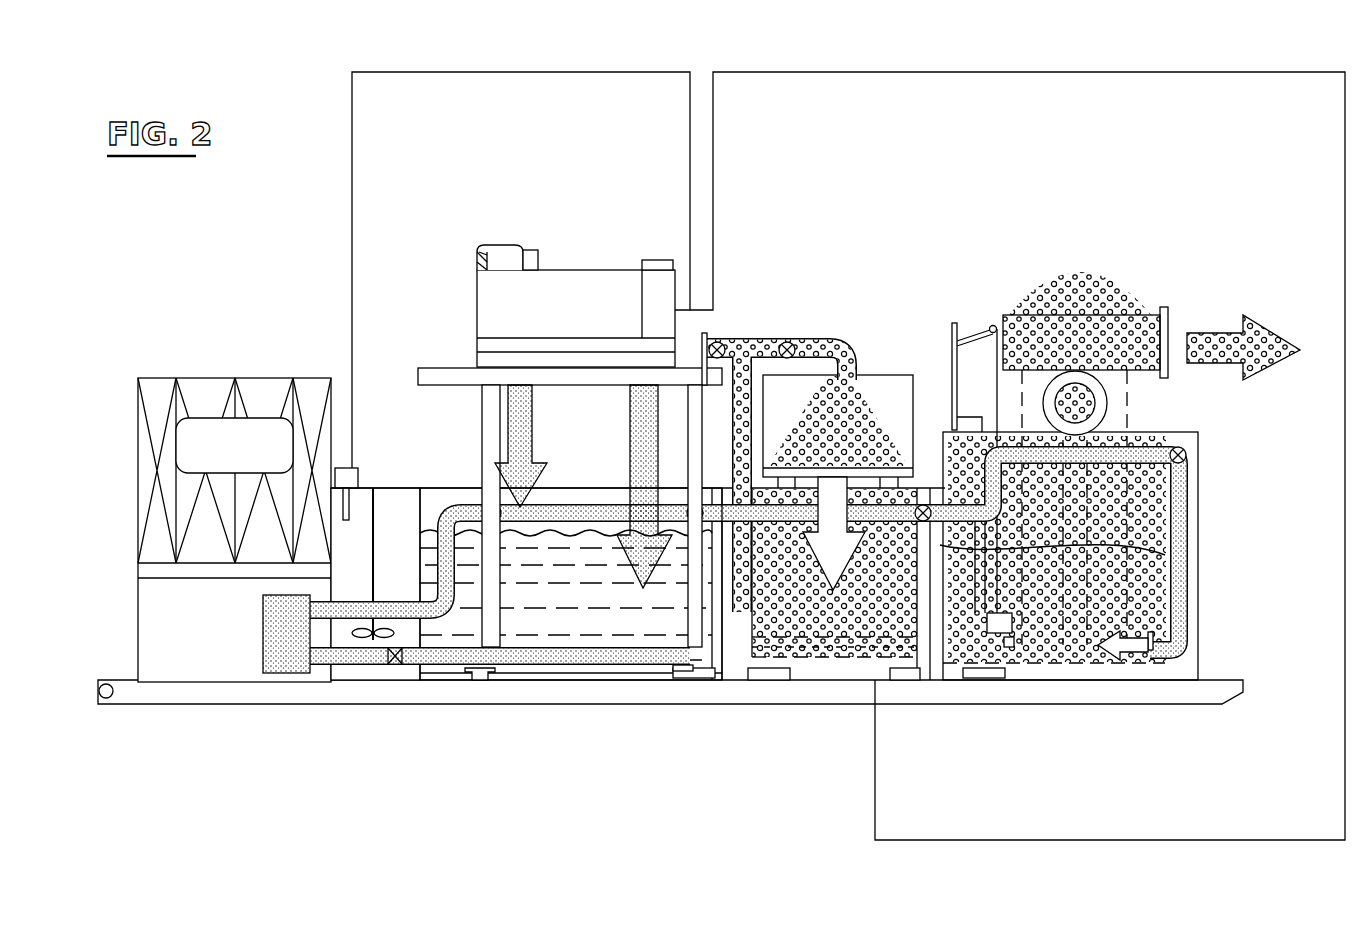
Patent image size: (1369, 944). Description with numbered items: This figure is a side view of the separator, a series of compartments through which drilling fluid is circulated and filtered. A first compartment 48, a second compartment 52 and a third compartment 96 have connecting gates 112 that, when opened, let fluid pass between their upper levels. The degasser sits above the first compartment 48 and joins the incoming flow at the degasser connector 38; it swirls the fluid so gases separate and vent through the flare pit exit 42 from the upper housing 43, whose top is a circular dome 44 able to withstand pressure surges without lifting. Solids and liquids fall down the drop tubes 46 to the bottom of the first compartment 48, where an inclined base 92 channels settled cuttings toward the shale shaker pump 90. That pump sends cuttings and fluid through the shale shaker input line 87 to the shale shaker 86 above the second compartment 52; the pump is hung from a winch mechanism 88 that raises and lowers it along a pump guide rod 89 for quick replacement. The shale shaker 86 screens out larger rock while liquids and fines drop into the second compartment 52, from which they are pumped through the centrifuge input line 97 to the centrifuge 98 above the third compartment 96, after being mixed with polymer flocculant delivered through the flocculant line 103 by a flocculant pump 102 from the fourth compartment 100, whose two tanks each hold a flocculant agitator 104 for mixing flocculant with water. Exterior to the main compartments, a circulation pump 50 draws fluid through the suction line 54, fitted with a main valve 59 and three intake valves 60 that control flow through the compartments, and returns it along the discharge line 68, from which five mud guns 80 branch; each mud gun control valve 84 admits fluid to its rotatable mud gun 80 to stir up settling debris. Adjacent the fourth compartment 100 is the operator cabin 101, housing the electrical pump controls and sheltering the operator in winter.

The degasser connector 38 is at (1105, 410).
The flare pit exit 42 is at (1172, 345).
The upper housing 43 is at (1100, 332).
The circular dome 44 is at (1080, 285).
The drop tubes 46 is at (1163, 320).
The first compartment 48 is at (1198, 612).
The circulation pump 50 is at (294, 672).
The second compartment 52 is at (890, 627).
The suction line 54 is at (582, 660).
The main valve 59 is at (395, 666).
The intake valves 60 is at (700, 679).
The discharge line 68 is at (440, 622).
The mud guns 80 is at (478, 673).
The mud gun control valve 84 is at (490, 505).
The shale shaker 86 is at (850, 342).
The shale shaker input line 87 is at (847, 643).
The winch mechanism 88 is at (978, 325).
The pump guide rod 89 is at (985, 635).
The shale shaker pump 90 is at (1012, 648).
The inclined base 92 is at (1140, 662).
The third compartment 96 is at (620, 625).
The centrifuge input line 97 is at (985, 72).
The centrifuge 98 is at (588, 270).
The fourth compartment 100 is at (388, 490).
The operator cabin 101 is at (197, 378).
The flocculant pump 102 is at (345, 468).
The flocculant line 103 is at (415, 72).
The flocculant agitator 104 is at (370, 640).
The connecting gates 112 is at (1165, 555).